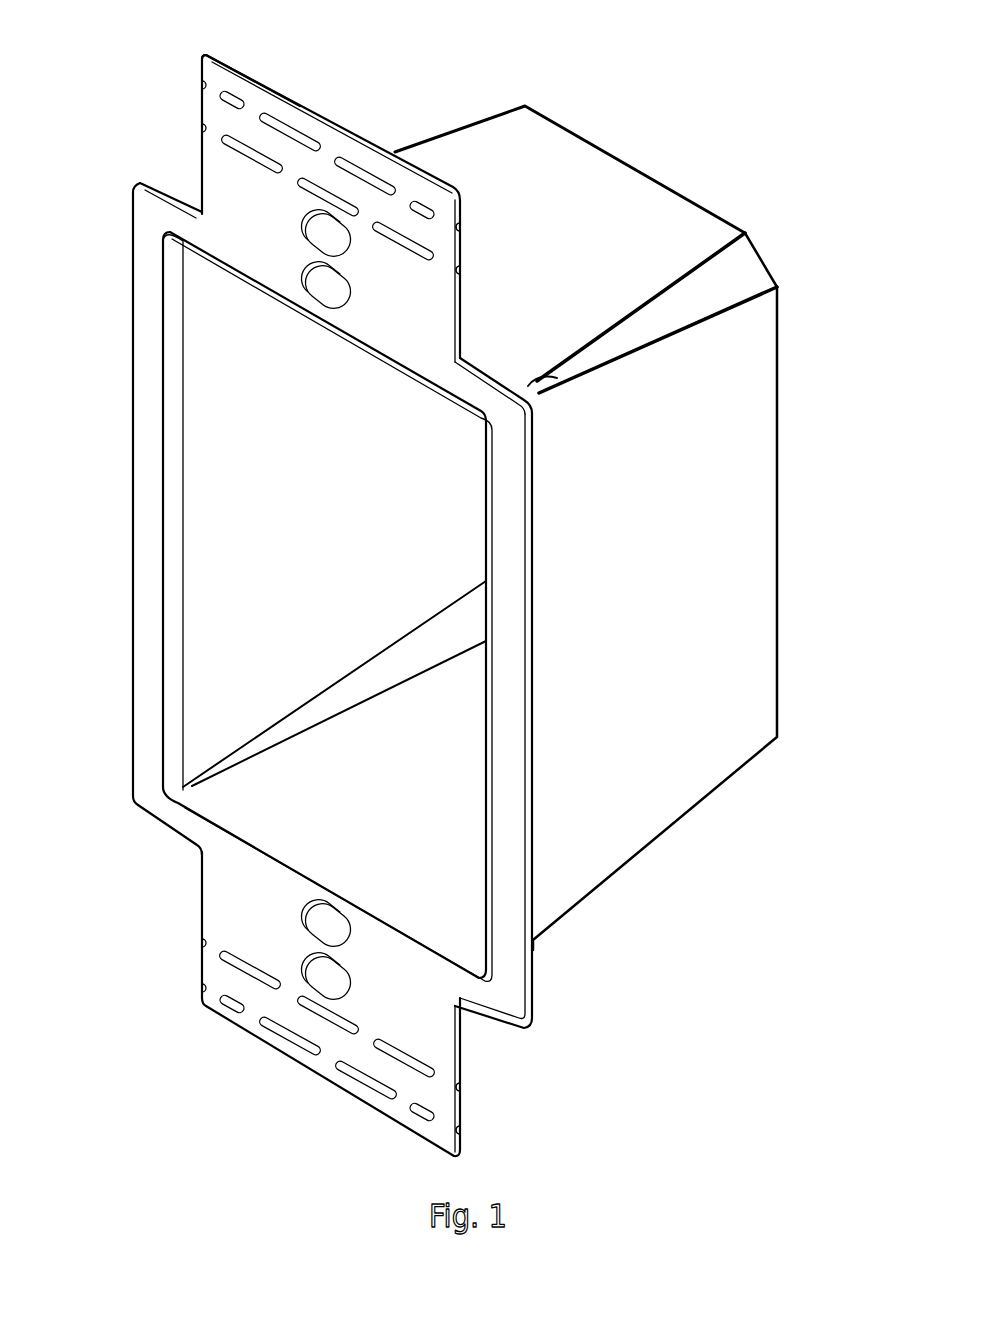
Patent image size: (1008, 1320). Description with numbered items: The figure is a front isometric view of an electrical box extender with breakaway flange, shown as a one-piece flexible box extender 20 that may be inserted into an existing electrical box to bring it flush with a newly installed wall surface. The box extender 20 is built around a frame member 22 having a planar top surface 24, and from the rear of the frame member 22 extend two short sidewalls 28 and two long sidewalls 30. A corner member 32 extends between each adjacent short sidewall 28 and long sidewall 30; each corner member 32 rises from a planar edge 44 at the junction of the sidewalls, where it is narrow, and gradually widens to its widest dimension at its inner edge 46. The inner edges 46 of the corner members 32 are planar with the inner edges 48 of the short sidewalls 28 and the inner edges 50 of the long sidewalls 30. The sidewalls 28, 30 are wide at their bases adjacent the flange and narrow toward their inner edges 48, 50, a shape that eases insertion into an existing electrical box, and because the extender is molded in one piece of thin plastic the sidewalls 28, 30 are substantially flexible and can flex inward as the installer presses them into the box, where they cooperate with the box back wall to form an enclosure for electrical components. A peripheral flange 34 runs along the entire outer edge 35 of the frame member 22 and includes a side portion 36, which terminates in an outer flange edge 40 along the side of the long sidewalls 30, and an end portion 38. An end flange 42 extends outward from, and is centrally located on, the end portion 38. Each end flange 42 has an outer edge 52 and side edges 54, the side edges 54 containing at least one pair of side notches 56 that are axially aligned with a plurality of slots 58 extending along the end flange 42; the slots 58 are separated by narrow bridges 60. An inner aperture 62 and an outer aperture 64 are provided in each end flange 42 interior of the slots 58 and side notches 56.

The box extender 20 is at (470, 588).
The frame member 22 is at (510, 486).
The planar top surface 24 is at (496, 566).
The short sidewalls 28 is at (378, 798).
The long sidewalls 30 is at (310, 508).
The corner member 32 is at (377, 675).
The peripheral flange 34 is at (525, 708).
The outer edge 35 is at (133, 503).
The side portion 36 is at (507, 803).
The end portion 38 is at (473, 390).
The outer flange edge 40 is at (528, 625).
The end flange 42 is at (304, 588).
The planar edge 44 is at (550, 380).
The inner edges 46 is at (762, 257).
The inner edges 48 is at (620, 160).
The inner edges 50 is at (778, 481).
The outer edge 52 is at (248, 77).
The side edges 54 is at (461, 310).
The side notches 56 is at (461, 270).
The slots 58 is at (368, 177).
The narrow bridges 60 is at (403, 197).
The inner aperture 62 is at (355, 307).
The outer aperture 64 is at (302, 231).